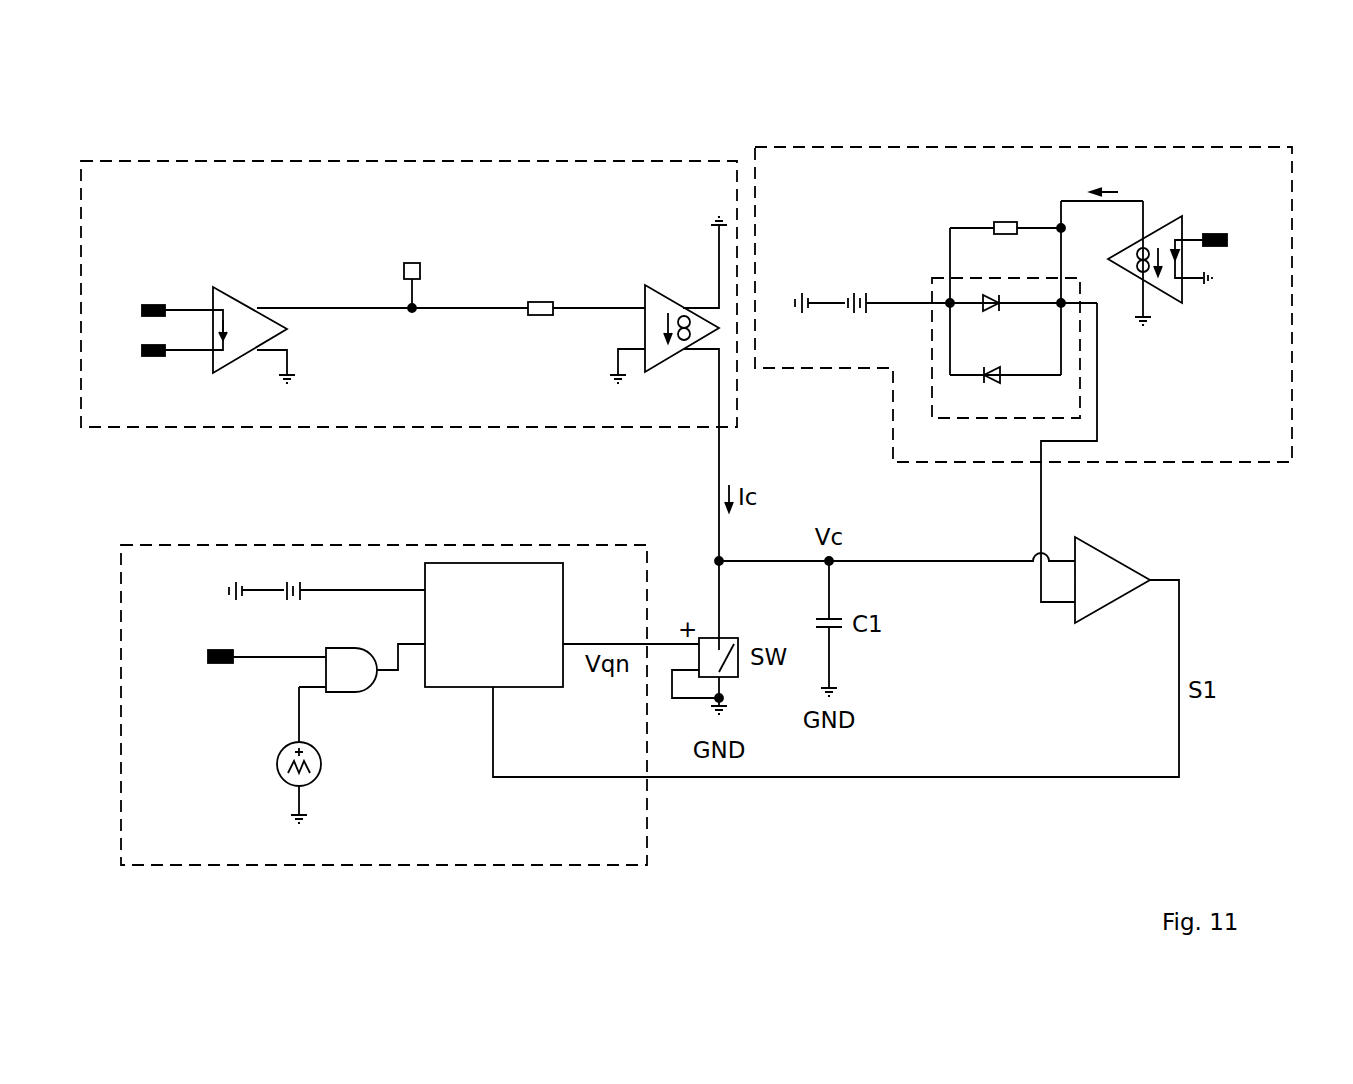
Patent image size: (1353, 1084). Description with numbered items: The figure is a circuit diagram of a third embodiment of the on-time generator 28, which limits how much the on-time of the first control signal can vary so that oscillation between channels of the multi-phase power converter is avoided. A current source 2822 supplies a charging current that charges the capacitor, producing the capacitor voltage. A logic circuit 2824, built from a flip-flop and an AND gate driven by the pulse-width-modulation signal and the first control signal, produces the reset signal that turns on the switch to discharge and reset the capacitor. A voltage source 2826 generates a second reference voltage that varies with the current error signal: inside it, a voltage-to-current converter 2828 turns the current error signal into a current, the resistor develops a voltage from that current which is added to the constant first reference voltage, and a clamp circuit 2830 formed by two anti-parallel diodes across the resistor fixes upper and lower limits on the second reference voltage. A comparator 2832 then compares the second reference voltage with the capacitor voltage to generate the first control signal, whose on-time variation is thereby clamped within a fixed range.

The on-time generator 28 is at (1307, 130).
The current source 2822 is at (352, 430).
The logic circuit 2824 is at (540, 542).
The voltage source 2826 is at (823, 370).
The voltage-to-current converter 2828 is at (1160, 222).
The clamp circuit 2830 is at (1080, 393).
The comparator 2832 is at (1115, 552).